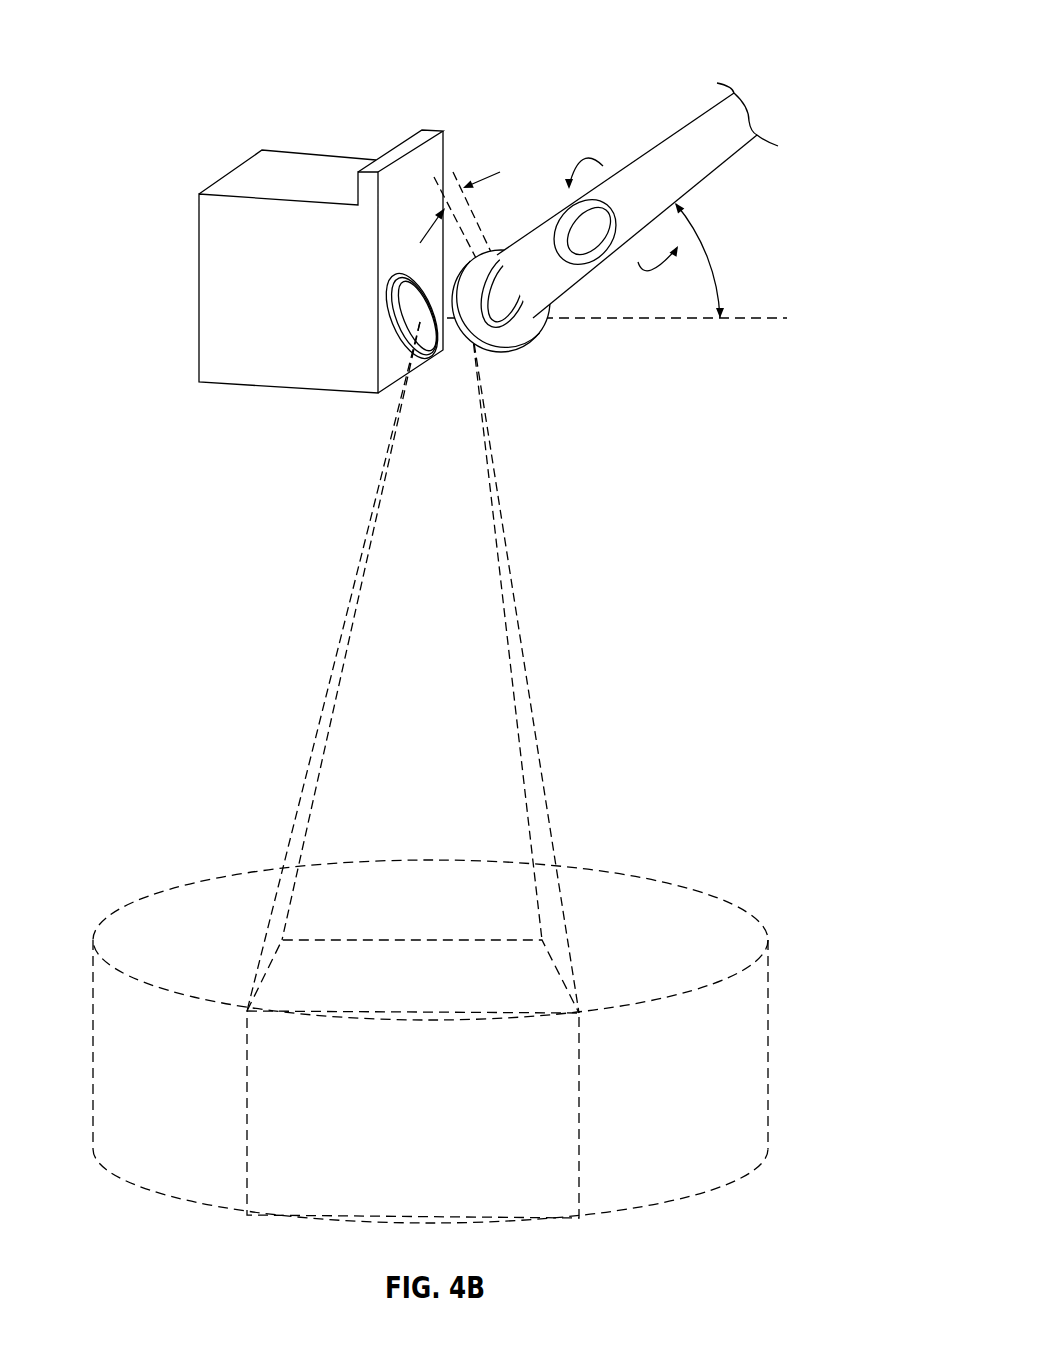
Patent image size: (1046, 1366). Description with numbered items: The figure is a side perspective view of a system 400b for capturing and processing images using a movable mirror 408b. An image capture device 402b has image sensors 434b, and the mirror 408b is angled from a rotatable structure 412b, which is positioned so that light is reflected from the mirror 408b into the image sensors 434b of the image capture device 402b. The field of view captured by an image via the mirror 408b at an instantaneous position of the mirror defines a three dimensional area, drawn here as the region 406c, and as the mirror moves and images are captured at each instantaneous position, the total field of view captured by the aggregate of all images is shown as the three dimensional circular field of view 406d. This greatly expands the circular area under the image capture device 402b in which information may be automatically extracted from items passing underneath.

The system 400b is at (127, 55).
The image capture device 402b is at (247, 177).
The image sensors 434b is at (414, 341).
The mirror 408b is at (515, 340).
The rotatable structure 412b is at (667, 146).
The rectangular field of view region 406c is at (404, 940).
The cylindrical sample region 406d is at (605, 868).